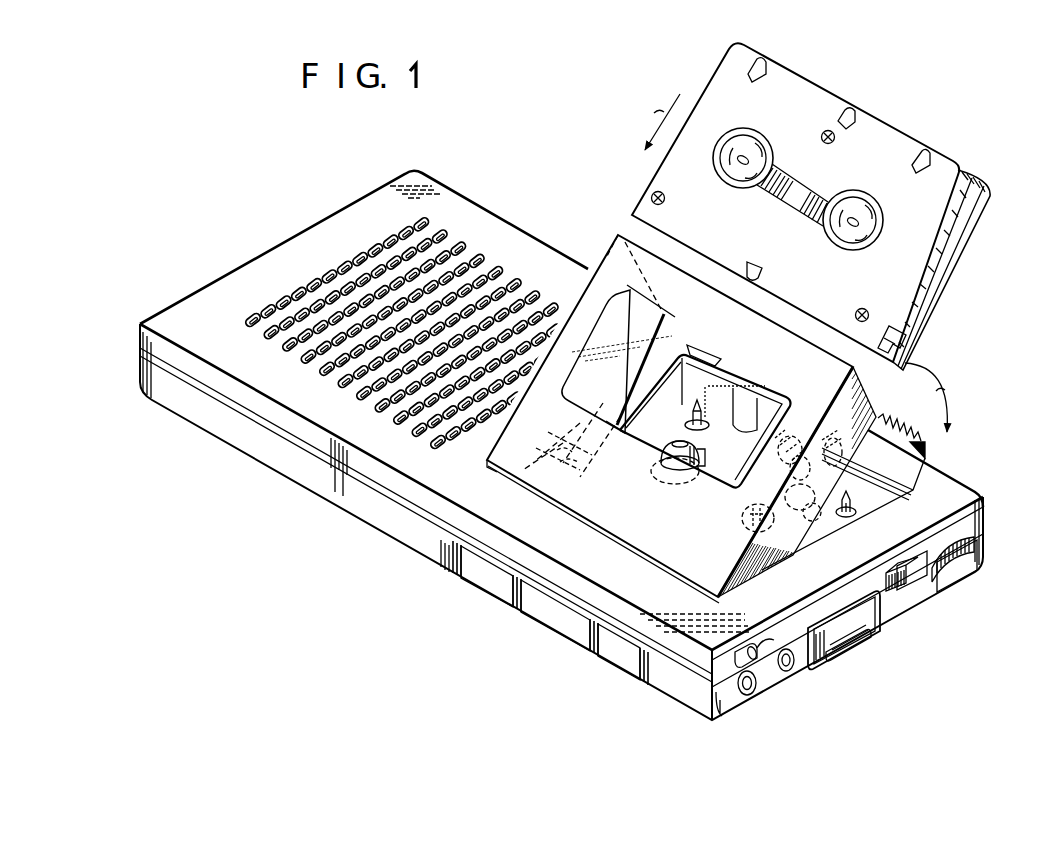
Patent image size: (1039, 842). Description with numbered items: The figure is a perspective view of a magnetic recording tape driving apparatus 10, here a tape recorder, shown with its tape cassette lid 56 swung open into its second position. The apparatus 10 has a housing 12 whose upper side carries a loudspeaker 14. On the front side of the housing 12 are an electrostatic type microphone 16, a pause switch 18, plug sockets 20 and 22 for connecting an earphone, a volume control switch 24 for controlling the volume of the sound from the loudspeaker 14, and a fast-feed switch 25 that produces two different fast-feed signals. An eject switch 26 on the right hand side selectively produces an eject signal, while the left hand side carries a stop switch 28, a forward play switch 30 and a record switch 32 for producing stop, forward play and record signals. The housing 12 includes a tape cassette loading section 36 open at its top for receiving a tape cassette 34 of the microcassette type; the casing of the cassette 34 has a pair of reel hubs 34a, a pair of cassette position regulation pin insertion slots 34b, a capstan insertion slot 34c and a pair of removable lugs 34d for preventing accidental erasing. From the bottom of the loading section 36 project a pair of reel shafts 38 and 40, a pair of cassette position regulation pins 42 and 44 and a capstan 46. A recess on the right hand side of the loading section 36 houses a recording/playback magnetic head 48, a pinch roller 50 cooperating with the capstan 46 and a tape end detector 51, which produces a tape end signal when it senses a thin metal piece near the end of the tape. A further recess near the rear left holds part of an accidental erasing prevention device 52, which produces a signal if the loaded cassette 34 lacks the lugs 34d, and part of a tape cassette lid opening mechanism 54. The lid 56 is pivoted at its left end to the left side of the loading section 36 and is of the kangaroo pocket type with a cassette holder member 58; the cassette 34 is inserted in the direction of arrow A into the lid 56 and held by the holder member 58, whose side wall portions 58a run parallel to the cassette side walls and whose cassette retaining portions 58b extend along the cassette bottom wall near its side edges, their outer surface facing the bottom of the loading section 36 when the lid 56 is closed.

The magnetic recording tape driving apparatus 10 is at (270, 481).
The housing 12 is at (496, 231).
The loudspeaker 14 is at (440, 237).
The electrostatic type microphone 16 is at (863, 634).
The pause switch 18 is at (752, 663).
The plug socket 20 is at (747, 697).
The plug socket 22 is at (788, 669).
The volume control switch 24 is at (953, 592).
The fast-feed switch 25 is at (907, 589).
The eject switch 26 is at (886, 428).
The stop switch 28 is at (481, 583).
The forward play switch 30 is at (552, 620).
The record switch 32 is at (617, 663).
The tape cassette 34 is at (893, 130).
The reel hubs 34a is at (742, 140).
The cassette position regulation pin insertion slots 34b is at (758, 66).
The capstan insertion slot 34c is at (848, 112).
The removable lugs 34d is at (905, 341).
The tape cassette loading section 36 is at (886, 495).
The reel shaft 38 is at (698, 456).
The reel shaft 40 is at (744, 504).
The cassette position regulation pin 42 is at (688, 410).
The cassette position regulation pin 44 is at (847, 516).
The capstan 46 is at (822, 506).
The recording/playback magnetic head 48 is at (752, 393).
The pinch roller 50 is at (797, 432).
The tape end detector 51 is at (845, 448).
The accidental erasing prevention device 52 is at (519, 477).
The tape cassette lid opening mechanism 54 is at (552, 463).
The tape cassette lid 56 is at (838, 364).
The cassette holder member 58 is at (656, 286).
The side wall portions 58a is at (610, 252).
The cassette retaining portions 58b is at (605, 375).